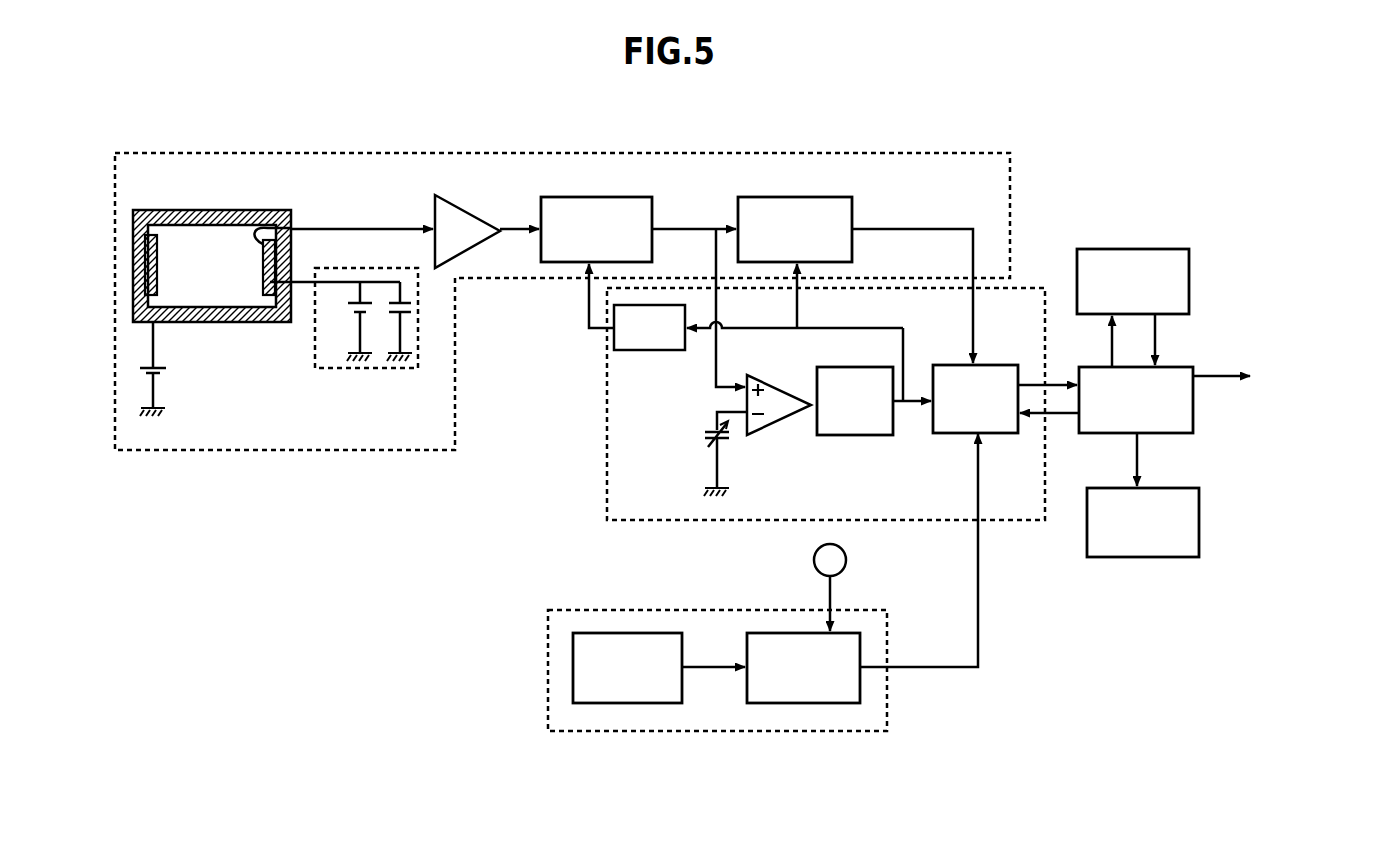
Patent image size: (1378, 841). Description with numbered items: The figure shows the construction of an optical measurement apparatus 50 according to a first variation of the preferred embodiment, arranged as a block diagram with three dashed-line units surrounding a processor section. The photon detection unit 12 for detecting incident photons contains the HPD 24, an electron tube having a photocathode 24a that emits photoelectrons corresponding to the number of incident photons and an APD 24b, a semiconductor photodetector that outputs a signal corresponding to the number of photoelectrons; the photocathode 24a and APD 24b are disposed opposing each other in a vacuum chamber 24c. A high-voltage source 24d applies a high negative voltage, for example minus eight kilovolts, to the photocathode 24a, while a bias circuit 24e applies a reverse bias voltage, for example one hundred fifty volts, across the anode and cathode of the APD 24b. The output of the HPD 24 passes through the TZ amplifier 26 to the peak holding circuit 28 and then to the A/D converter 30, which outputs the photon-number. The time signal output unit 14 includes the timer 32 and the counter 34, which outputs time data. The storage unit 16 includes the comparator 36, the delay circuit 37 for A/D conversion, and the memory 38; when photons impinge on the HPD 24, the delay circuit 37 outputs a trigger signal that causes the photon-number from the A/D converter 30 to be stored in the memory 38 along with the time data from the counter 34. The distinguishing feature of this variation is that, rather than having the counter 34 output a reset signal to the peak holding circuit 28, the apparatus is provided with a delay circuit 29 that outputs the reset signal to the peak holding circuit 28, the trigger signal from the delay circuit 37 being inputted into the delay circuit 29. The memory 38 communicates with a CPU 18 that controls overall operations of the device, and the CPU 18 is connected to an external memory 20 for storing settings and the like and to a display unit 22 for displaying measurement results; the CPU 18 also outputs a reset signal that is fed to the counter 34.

The optical measurement apparatus 50 is at (1078, 195).
The photon detection unit 12 is at (346, 153).
The HPD 24 is at (195, 253).
The photocathode 24a is at (152, 212).
The APD 24b is at (268, 322).
The vacuum chamber 24c is at (236, 210).
The high-voltage source 24d is at (142, 372).
The bias circuit 24e is at (395, 369).
The TZ amplifier 26 is at (476, 246).
The peak holding circuit 28 is at (628, 197).
The A/D converter 30 is at (812, 197).
The delay circuit 29 is at (634, 351).
The storage unit 16 is at (1010, 521).
The comparator 36 is at (782, 420).
The delay circuit for A/D conversion 37 is at (875, 436).
The memory 38 is at (996, 433).
The CPU 18 is at (1195, 425).
The external memory 20 is at (1190, 278).
The display unit 22 is at (1200, 519).
The time signal output unit 14 is at (656, 731).
The timer 32 is at (595, 633).
The counter 34 is at (765, 633).